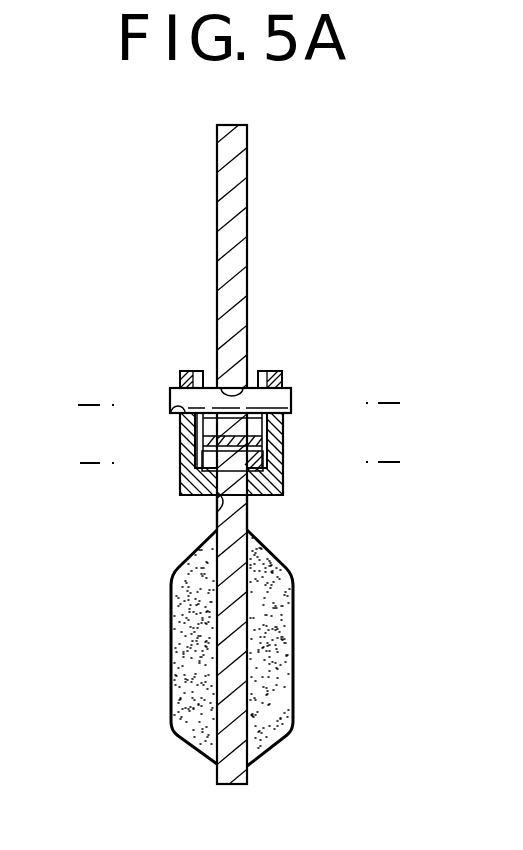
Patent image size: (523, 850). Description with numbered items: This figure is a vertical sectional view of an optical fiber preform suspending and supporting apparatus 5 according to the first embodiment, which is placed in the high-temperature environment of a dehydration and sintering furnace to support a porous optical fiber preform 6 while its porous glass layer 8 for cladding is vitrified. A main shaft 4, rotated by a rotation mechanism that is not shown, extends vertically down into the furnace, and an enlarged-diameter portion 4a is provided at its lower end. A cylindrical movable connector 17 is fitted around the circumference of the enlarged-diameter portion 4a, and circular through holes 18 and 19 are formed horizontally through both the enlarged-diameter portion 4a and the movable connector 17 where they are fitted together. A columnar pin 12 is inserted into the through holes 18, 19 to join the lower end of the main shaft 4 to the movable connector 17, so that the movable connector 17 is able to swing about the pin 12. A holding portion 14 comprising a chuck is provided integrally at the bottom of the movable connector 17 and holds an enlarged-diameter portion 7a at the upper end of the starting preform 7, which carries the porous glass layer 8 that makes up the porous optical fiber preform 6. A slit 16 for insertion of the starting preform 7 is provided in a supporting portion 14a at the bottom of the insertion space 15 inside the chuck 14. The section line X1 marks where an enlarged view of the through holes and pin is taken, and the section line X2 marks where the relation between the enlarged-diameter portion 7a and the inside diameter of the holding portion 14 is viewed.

The main shaft 4 is at (236, 175).
The enlarged-diameter portion 4a is at (208, 388).
The optical fiber preform suspending and supporting apparatus 5 is at (152, 412).
The porous optical fiber preform 6 is at (162, 669).
The starting preform 7 is at (255, 518).
The enlarged-diameter portion of the starting preform 7a is at (283, 462).
The porous glass layer 8 is at (293, 710).
The columnar pin 12 is at (282, 398).
The holding portion 14 is at (283, 456).
The supporting portion 14a is at (183, 492).
The insertion space 15 is at (282, 433).
The slit 16 is at (212, 510).
The movable connector 17 is at (183, 372).
The through hole 18 is at (250, 372).
The through hole 19 is at (175, 413).
The line X1— X1 is at (241, 403).
The line X2— X2 is at (241, 461).